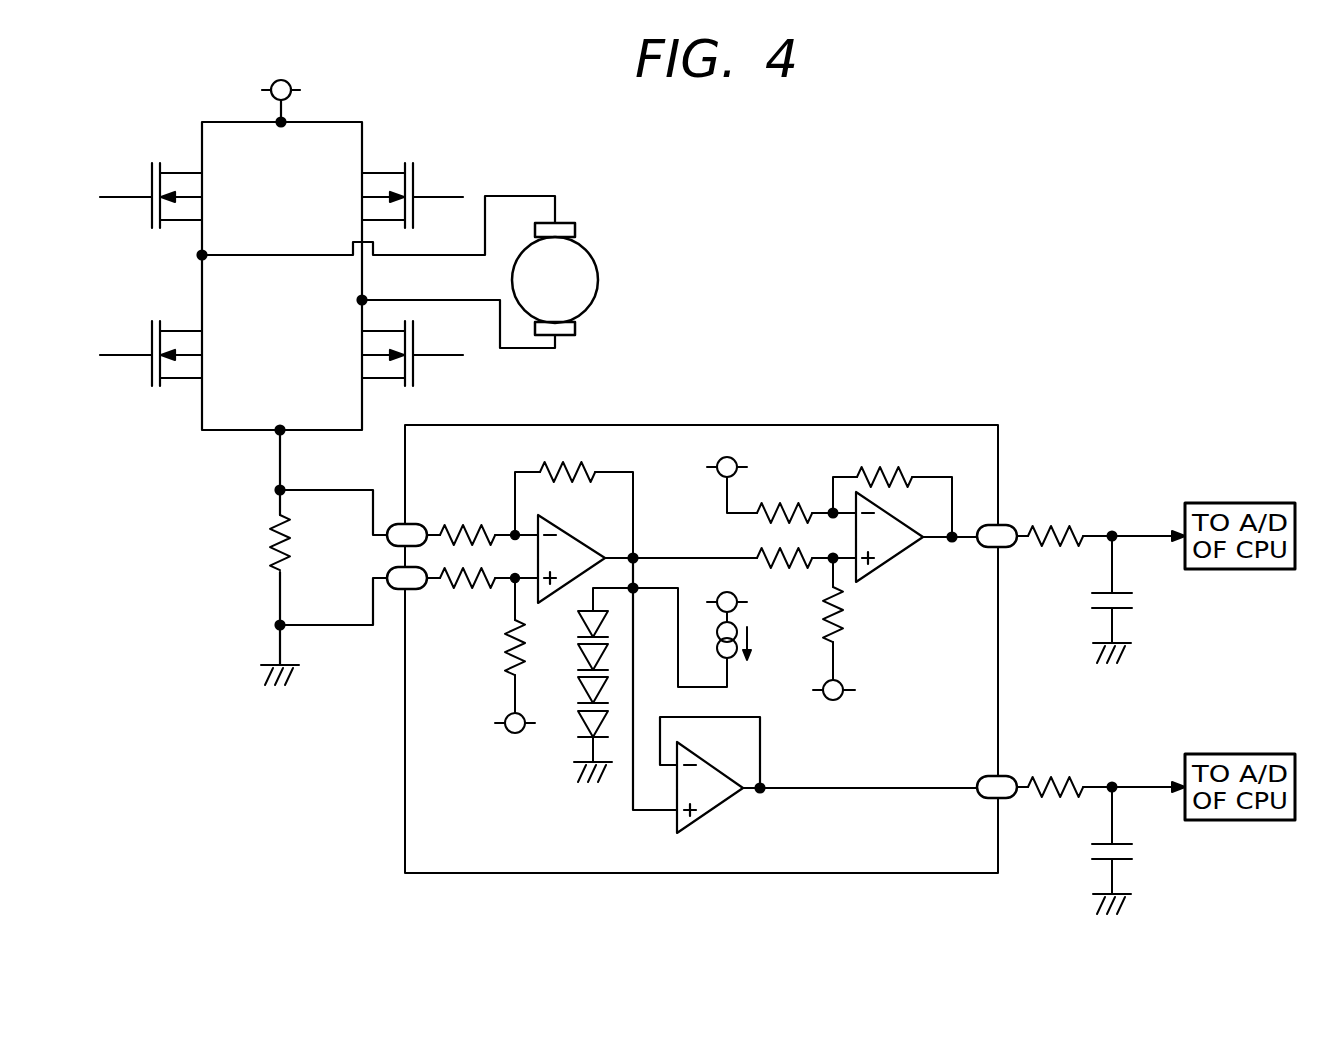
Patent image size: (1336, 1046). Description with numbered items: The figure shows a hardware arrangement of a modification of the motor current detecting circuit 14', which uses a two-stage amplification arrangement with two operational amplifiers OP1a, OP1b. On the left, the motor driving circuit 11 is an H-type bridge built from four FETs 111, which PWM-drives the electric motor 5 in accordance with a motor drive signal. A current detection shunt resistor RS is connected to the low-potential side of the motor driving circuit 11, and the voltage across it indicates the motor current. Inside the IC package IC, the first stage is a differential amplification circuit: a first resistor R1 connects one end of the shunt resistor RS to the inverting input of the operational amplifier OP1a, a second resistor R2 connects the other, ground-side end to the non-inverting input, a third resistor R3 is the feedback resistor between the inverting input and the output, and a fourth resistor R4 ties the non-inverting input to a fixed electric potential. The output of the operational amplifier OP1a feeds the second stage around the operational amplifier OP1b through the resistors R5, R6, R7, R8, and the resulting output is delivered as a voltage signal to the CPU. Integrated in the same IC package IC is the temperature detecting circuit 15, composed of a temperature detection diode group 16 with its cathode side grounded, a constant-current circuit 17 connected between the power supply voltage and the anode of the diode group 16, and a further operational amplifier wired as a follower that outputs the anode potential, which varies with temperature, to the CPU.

The motor driving circuit 11 is at (374, 68).
The FETs 111 is at (177, 173).
The electric motor 5 is at (597, 258).
The current detection shunt resistor RS is at (268, 545).
The IC package IC is at (730, 425).
The first resistor R1 is at (453, 528).
The second resistor R2 is at (448, 583).
The third resistor R3 is at (588, 468).
The fourth resistor R4 is at (505, 658).
The resistor R5 is at (780, 503).
The resistor R6 is at (763, 545).
The resistor R7 is at (892, 467).
The resistor R8 is at (847, 628).
The operational amplifier OP1a is at (585, 535).
The operational amplifier OP1b is at (888, 563).
The motor current detecting circuit 14' is at (900, 571).
The temperature detecting circuit 15 is at (725, 805).
The temperature detection diode group 16 is at (583, 655).
The constant-current circuit 17 is at (752, 637).